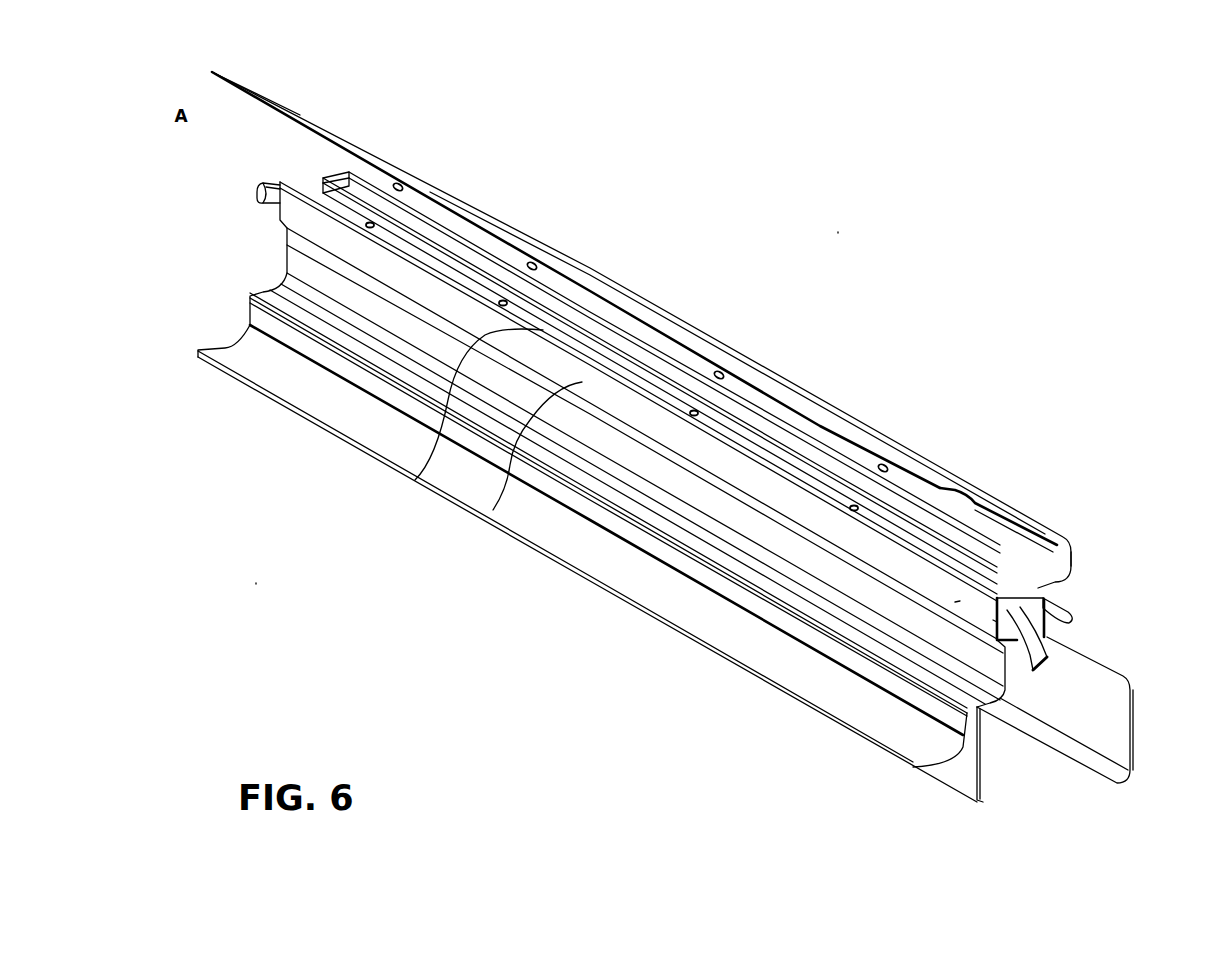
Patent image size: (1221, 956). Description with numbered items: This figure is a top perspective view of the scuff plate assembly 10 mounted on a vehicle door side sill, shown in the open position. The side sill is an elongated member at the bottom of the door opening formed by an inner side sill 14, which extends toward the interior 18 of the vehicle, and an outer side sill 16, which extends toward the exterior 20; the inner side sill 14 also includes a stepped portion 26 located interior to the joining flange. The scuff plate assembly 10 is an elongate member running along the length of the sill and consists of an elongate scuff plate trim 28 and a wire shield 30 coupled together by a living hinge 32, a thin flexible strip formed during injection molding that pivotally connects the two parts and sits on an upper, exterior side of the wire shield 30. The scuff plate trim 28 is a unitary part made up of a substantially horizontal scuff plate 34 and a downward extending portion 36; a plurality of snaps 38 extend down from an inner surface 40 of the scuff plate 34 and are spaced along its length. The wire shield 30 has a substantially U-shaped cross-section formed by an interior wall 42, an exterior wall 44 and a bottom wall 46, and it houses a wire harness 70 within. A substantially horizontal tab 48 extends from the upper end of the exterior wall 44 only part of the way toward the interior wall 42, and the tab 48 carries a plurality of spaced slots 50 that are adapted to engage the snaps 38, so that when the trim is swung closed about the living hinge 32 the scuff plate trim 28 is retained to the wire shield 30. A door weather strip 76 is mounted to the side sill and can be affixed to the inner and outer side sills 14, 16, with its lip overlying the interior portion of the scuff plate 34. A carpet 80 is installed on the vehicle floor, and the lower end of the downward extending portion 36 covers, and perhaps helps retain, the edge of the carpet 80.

The scuff plate assembly 10 is at (275, 256).
The inner side sill 14 is at (977, 772).
The outer side sill 16 is at (1130, 715).
The interior 18 is at (246, 586).
The exterior 20 is at (828, 235).
The stepped portion 26 is at (1000, 650).
The scuff plate trim 28 is at (590, 250).
The wire shield 30 is at (955, 602).
The living hinge 32 is at (322, 172).
The scuff plate 34 is at (1071, 565).
The downward extending portion 36 is at (300, 115).
The snaps 38 is at (404, 190).
The inner surface 40 is at (654, 347).
The interior wall 42 is at (1003, 598).
The exterior wall 44 is at (493, 510).
The bottom wall 46 is at (993, 620).
The tab 48 is at (415, 480).
The slots 50 is at (371, 223).
The wire harness 70 is at (1050, 644).
The door weather strip 76 is at (1072, 593).
The carpet 80 is at (545, 552).